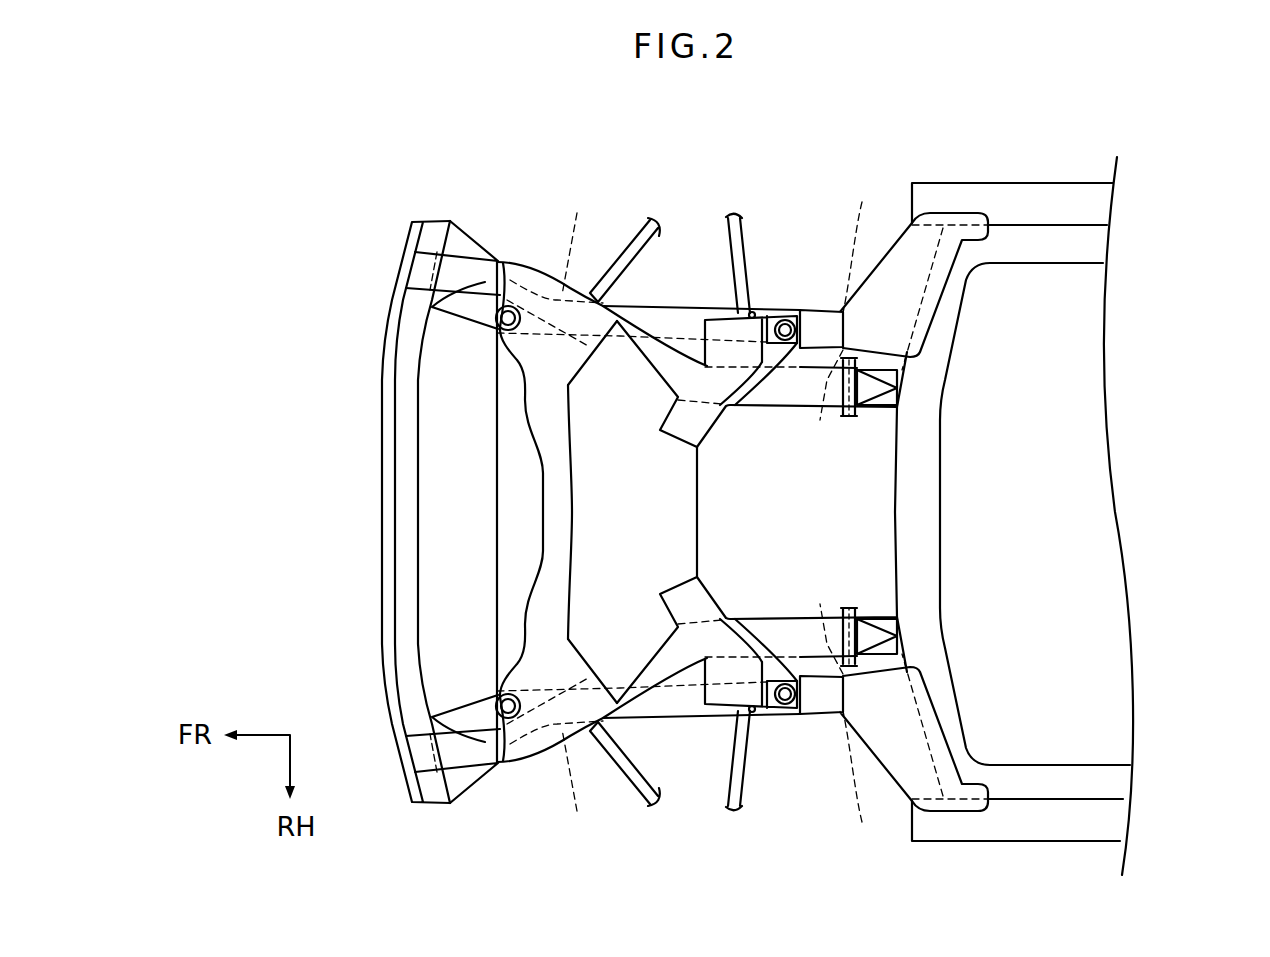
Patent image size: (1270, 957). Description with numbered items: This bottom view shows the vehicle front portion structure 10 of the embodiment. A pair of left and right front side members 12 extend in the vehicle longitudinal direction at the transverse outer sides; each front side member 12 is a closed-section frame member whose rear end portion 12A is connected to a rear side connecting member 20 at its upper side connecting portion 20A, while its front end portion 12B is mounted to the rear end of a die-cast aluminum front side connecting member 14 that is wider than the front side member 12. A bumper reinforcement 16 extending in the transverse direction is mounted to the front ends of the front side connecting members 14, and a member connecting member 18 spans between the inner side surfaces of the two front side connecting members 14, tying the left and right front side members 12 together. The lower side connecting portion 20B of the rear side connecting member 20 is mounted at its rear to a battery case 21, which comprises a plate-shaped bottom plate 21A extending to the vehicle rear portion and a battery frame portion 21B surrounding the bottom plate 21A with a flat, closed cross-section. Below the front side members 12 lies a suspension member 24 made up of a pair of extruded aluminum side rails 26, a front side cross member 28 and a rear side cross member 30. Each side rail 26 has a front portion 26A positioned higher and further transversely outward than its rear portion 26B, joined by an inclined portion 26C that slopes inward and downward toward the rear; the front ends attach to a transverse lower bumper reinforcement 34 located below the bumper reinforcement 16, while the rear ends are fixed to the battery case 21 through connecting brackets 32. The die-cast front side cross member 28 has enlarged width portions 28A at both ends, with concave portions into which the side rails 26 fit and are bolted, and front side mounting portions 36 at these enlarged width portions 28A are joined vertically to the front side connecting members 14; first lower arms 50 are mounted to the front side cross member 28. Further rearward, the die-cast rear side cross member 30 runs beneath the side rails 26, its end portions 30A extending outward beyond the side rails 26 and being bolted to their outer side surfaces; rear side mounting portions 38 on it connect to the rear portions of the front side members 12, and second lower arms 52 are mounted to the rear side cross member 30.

The vehicle front section structure 10 is at (528, 162).
The front side member 12 is at (690, 296).
The rear end portion 12A is at (881, 517).
The front end portion 12B is at (573, 512).
The front side connecting member 14 is at (472, 232).
The bumper reinforcement 16 is at (420, 447).
The member connecting member 18 is at (497, 508).
The rear side connecting member 20 is at (948, 312).
The upper side connecting portion 20A is at (817, 308).
The lower side connecting portion 20B is at (977, 210).
The battery case 21 is at (1110, 382).
The bottom plate 21A is at (1078, 524).
The battery frame portion 21B is at (1073, 224).
The suspension member 24 is at (728, 503).
The side rail 26 is at (630, 385).
The front portion 26A is at (432, 307).
The rear portion 26B is at (810, 406).
The inclined portion 26C is at (660, 340).
The front side cross member 28 is at (580, 526).
The enlarged width portion 28A is at (517, 359).
The rear side cross member 30 is at (710, 466).
The end portion 30A is at (760, 313).
The connecting bracket 32 is at (867, 408).
The lower bumper reinforcement 34 is at (382, 516).
The front side mounting portion 36 is at (508, 298).
The rear side mounting portion 38 is at (740, 401).
The first lower arm 50 is at (647, 216).
The second lower arm 52 is at (737, 220).